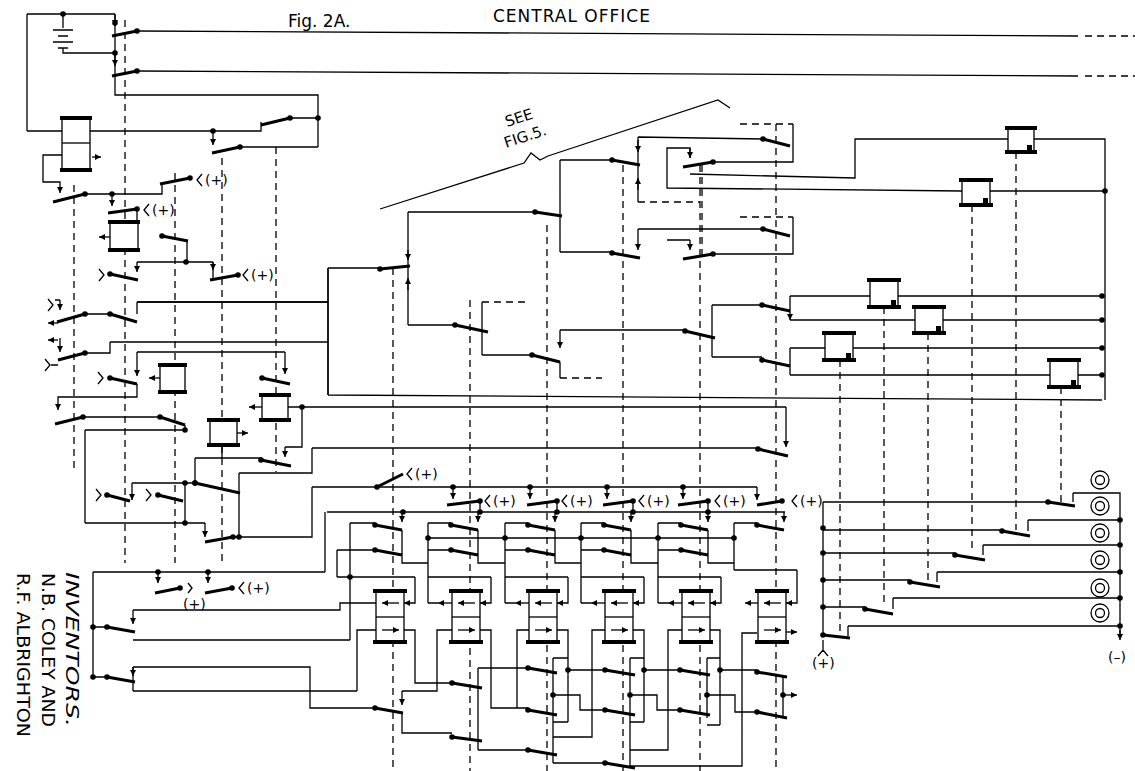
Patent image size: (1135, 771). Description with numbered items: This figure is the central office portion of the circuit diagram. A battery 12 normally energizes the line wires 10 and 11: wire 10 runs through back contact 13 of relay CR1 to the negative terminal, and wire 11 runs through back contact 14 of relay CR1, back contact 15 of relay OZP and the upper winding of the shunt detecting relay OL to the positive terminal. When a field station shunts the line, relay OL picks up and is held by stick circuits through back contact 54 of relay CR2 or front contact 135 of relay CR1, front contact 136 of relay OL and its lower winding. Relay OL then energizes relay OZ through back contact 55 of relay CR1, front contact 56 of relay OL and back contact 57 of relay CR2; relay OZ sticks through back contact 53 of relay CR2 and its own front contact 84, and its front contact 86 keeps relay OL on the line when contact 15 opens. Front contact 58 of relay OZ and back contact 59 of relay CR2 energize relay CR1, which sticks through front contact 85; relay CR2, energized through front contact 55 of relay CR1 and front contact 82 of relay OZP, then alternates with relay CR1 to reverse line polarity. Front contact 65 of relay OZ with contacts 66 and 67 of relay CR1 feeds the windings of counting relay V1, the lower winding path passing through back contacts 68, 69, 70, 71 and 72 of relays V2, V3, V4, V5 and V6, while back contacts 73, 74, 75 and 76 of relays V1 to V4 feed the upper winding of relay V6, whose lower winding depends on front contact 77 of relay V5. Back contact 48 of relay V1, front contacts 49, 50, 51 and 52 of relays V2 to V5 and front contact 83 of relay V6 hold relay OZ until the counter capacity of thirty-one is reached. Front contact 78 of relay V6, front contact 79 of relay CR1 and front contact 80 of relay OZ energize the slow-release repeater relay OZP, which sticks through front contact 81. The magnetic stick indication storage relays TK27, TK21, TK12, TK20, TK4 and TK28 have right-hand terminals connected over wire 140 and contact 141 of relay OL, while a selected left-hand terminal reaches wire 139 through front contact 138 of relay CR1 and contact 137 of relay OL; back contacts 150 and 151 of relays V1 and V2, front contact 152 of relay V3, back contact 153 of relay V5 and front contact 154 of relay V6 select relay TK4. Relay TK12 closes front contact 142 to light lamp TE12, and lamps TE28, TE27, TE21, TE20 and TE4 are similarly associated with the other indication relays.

The line wire 10 is at (183, 30).
The line wire 11 is at (183, 70).
The battery 12 is at (72, 40).
The back contact of relay CR1 13 is at (143, 20).
The back contact of relay CR1 14 is at (143, 60).
The back contact of relay OZP 15 is at (272, 124).
The back contact of relay V1 48 is at (402, 470).
The front contact of relay V2 49 is at (467, 503).
The front contact of relay V3 50 is at (545, 498).
The front contact of relay V4 51 is at (622, 498).
The front contact of relay V5 52 is at (697, 498).
The contact of relay CR2 53 is at (152, 505).
The back contact of relay CR2 54 is at (194, 174).
The contact of relay CR1 55 is at (105, 370).
The front contact of relay OL 56 is at (67, 425).
The back contact of relay CR2 57 is at (172, 418).
The front contact of relay OZ 58 is at (228, 283).
The back contact of relay CR2 59 is at (181, 229).
The front contact of relay OZ 65 is at (237, 597).
The contact of relay CR1 66 is at (116, 640).
The back contact of relay CR1 67 is at (115, 694).
The back contact of relay V2 68 is at (465, 690).
The back contact of relay V3 69 is at (542, 718).
The back contact of relay V4 70 is at (617, 677).
The back contact of relay V5 71 is at (697, 720).
The back contact of relay V6 72 is at (768, 662).
The back contact of relay V1 73 is at (377, 561).
The back contact of relay V2 74 is at (460, 561).
The back contact of relay V3 75 is at (537, 561).
The back contact of relay V4 76 is at (614, 561).
The front contact of relay V5 77 is at (644, 762).
The front contact of relay V6 78 is at (766, 441).
The front contact of relay CR1 79 is at (108, 495).
The front contact of relay OZ 80 is at (228, 492).
The front contact of relay OZP 81 is at (285, 457).
The front contact of relay OZP 82 is at (266, 372).
The front contact of relay V6 83 is at (773, 500).
The front contact of relay OZ 84 is at (226, 543).
The front contact of relay CR1 85 is at (113, 283).
The front contact of relay OZ 86 is at (226, 152).
The front contact of relay CR1 135 is at (126, 213).
The front contact of relay OL 136 is at (70, 203).
The contact of relay OL 137 is at (64, 316).
The front contact of relay CR1 138 is at (132, 325).
The wire 139 is at (328, 297).
The wire 140 is at (328, 372).
The contact of relay OL 141 is at (66, 353).
The front contact of relay TK12 142 is at (895, 611).
The back contact of relay V1 150 is at (384, 283).
The back contact of relay V2 151 is at (464, 334).
The front contact of relay V3 152 is at (540, 361).
The back contact of relay V5 153 is at (699, 339).
The front contact of relay V6 154 is at (765, 371).
The shunt detecting relay OL is at (89, 134).
The relay CR1 is at (123, 234).
The relay CR2 is at (178, 383).
The relay OZ is at (219, 420).
The repeater relay OZP is at (274, 402).
The indication storage relay TK27 is at (1018, 131).
The indication storage relay TK21 is at (973, 183).
The indication storage relay TK12 is at (883, 285).
The indication storage relay TK20 is at (950, 319).
The indication storage relay TK4 is at (854, 344).
The indication storage relay TK28 is at (1050, 365).
The counting relay V1 is at (398, 633).
The counting relay V2 is at (474, 633).
The counting relay V3 is at (551, 633).
The counting relay V4 is at (627, 633).
The counting relay V5 is at (704, 633).
The counting relay V6 is at (780, 634).
The terminal TE28 is at (1101, 469).
The terminal TE27 is at (1092, 497).
The terminal TE21 is at (1076, 534).
The terminal TE20 is at (1076, 561).
The indication lamp TE12 is at (1076, 589).
The terminal TE4 is at (1078, 614).